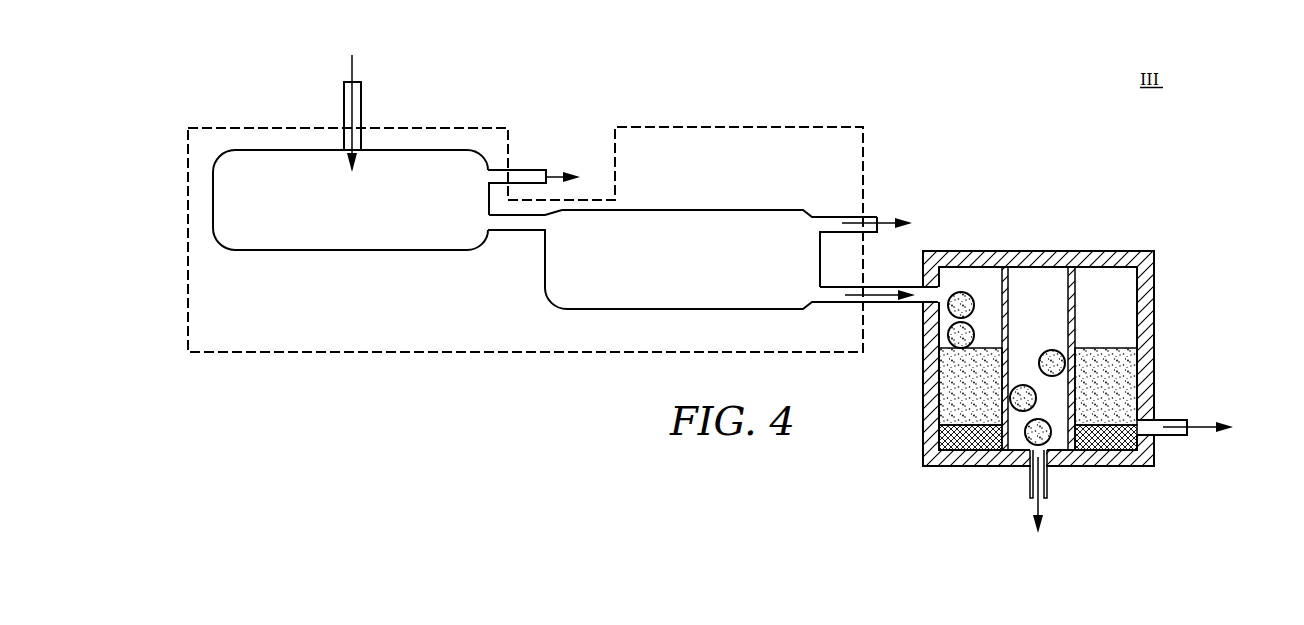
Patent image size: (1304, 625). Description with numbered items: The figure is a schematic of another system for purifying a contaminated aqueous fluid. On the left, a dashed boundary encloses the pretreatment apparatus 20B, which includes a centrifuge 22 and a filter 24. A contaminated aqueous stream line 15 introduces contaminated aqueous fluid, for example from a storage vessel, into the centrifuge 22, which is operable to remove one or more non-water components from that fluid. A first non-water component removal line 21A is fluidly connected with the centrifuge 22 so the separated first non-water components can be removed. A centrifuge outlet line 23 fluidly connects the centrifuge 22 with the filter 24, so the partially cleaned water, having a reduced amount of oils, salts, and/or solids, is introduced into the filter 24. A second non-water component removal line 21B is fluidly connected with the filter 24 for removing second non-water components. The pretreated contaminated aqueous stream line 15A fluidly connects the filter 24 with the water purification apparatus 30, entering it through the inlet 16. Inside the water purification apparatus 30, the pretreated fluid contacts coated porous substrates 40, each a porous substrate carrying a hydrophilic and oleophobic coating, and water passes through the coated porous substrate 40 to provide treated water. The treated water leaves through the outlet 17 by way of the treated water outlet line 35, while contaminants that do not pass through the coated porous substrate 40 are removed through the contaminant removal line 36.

The contaminated aqueous stream line 15 is at (345, 101).
The first non-water component removal line 21A is at (557, 176).
The centrifuge 22 is at (364, 213).
The centrifuge outlet line 23 is at (517, 232).
The filter 24 is at (694, 273).
The pretreatment apparatus 20B is at (542, 340).
The second non-water component removal line 21B is at (885, 222).
The inlet 16 is at (932, 292).
The pretreated contaminated aqueous stream line 15A is at (890, 299).
The water purification apparatus 30 is at (1098, 222).
The coated porous substrate 40 is at (1075, 312).
The contaminant removal line 36 is at (1197, 431).
The outlet 17 is at (1047, 468).
The treated water outlet line 35 is at (1033, 497).